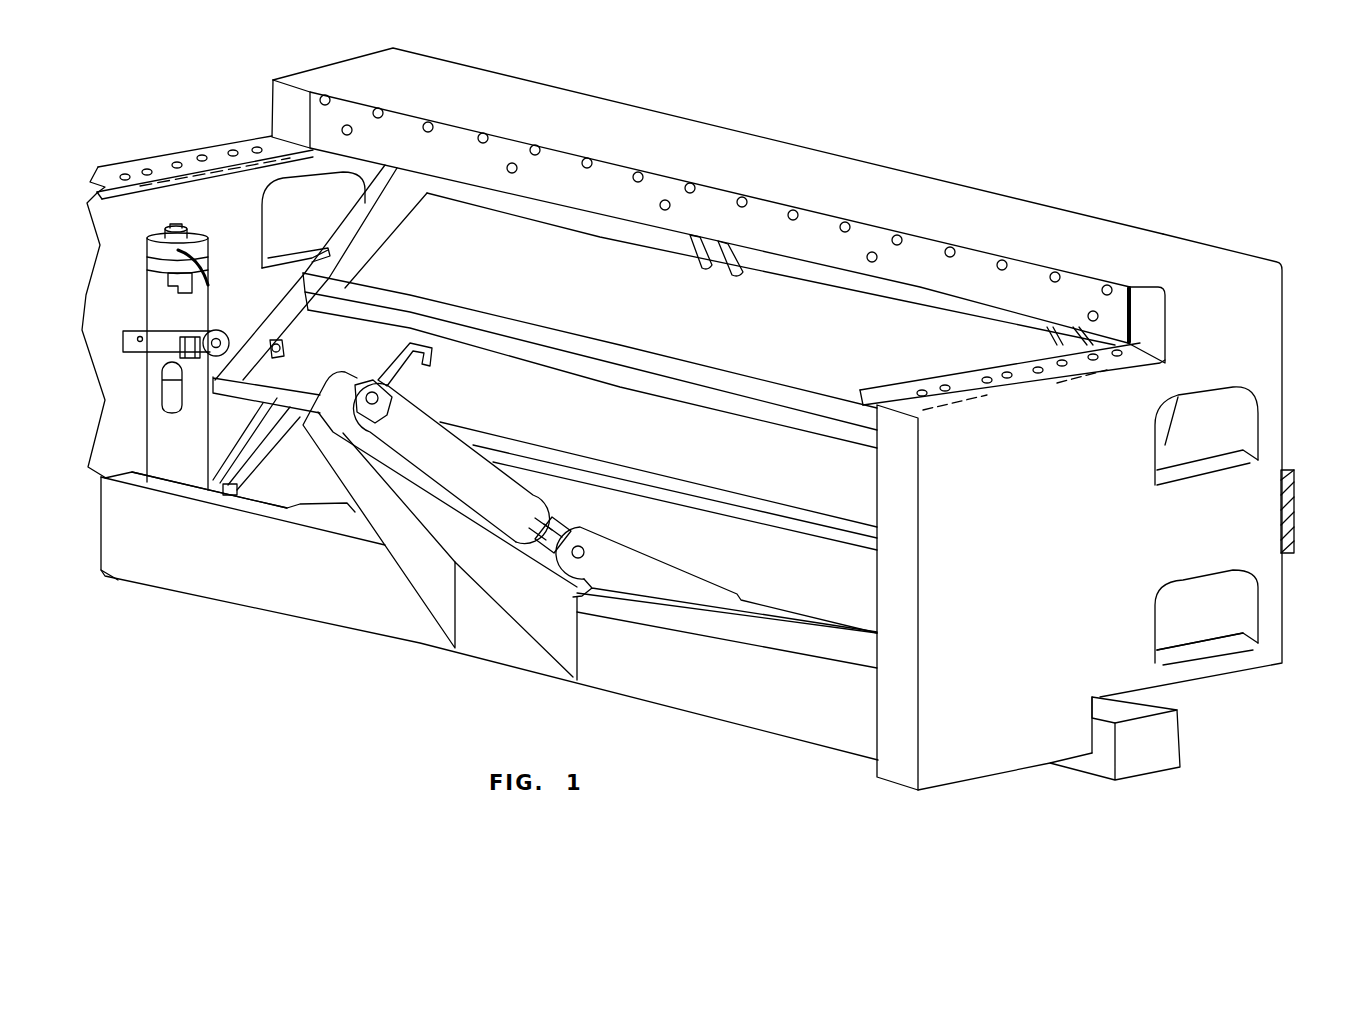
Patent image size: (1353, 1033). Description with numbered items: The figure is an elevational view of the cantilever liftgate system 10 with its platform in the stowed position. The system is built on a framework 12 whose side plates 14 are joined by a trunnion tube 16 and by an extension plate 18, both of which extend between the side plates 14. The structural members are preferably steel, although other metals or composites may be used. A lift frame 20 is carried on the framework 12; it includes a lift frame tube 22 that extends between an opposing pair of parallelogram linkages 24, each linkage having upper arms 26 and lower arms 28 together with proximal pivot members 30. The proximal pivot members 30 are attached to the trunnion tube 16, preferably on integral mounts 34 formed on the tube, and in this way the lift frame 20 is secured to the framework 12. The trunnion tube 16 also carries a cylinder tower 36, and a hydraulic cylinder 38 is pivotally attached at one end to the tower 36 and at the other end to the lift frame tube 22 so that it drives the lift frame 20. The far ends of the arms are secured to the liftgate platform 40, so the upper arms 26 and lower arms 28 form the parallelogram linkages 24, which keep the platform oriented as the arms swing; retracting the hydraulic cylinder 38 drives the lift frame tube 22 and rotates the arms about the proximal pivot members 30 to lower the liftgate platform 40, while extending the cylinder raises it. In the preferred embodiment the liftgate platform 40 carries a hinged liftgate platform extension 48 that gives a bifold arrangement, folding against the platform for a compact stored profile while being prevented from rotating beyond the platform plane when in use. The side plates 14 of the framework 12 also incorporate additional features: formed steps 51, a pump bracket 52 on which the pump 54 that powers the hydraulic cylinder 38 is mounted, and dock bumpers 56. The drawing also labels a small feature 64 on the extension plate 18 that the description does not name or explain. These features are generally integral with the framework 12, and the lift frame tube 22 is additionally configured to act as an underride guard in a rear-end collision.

The cantilever liftgate system 10 is at (884, 115).
The framework 12 is at (1258, 270).
The side plates 14 is at (160, 162).
The trunnion tube 16 is at (746, 715).
The extension plate 18 is at (909, 211).
The lift frame 20 is at (757, 594).
The lift frame tube 22 is at (813, 633).
The parallelogram linkages 24 is at (287, 510).
The upper arms 26 is at (252, 432).
The lower arms 28 is at (314, 478).
The proximal pivot members 30 is at (215, 487).
The integral mounts 34 is at (226, 483).
The cylinder tower 36 is at (489, 556).
The hydraulic cylinder 38 is at (475, 483).
The liftgate platform 40 is at (657, 443).
The liftgate platform extension 48 is at (702, 319).
The formed steps 51 is at (1205, 650).
The pump bracket 52 is at (228, 330).
The pump 54 is at (165, 318).
The dock bumpers 56 is at (1296, 508).
The hole 64 is at (1090, 312).